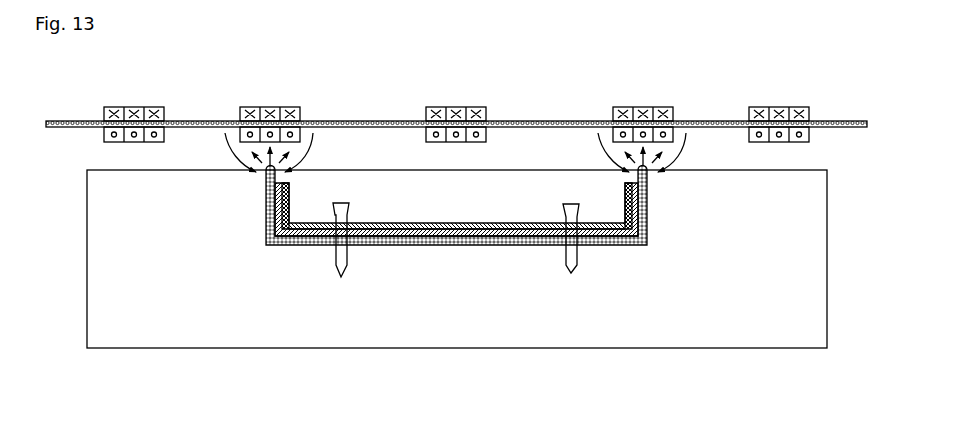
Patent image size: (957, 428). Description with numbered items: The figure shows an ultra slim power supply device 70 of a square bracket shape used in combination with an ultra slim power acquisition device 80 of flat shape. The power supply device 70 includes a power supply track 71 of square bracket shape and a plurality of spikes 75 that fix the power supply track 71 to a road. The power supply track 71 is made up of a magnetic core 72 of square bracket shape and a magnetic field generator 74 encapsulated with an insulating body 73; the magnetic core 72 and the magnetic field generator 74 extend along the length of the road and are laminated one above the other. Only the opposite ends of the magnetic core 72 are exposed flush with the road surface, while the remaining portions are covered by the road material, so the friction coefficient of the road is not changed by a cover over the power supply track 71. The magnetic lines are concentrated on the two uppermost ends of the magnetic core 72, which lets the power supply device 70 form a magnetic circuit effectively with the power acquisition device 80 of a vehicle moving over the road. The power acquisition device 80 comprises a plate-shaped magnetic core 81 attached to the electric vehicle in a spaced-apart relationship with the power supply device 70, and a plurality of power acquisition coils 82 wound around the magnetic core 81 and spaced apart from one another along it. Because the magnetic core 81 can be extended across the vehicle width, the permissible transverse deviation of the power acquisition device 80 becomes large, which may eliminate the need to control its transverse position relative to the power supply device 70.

The ultra slim power supply device 70 is at (250, 218).
The power supply track 71 is at (430, 258).
The magnetic core 72 is at (647, 231).
The insulating body 73 is at (647, 213).
The magnetic field generator 74 is at (647, 190).
The spikes 75 is at (570, 274).
The ultra slim power acquisition device 80 is at (83, 115).
The plate-shaped magnetic core 81 is at (197, 120).
The power acquisition coils 82 is at (270, 106).